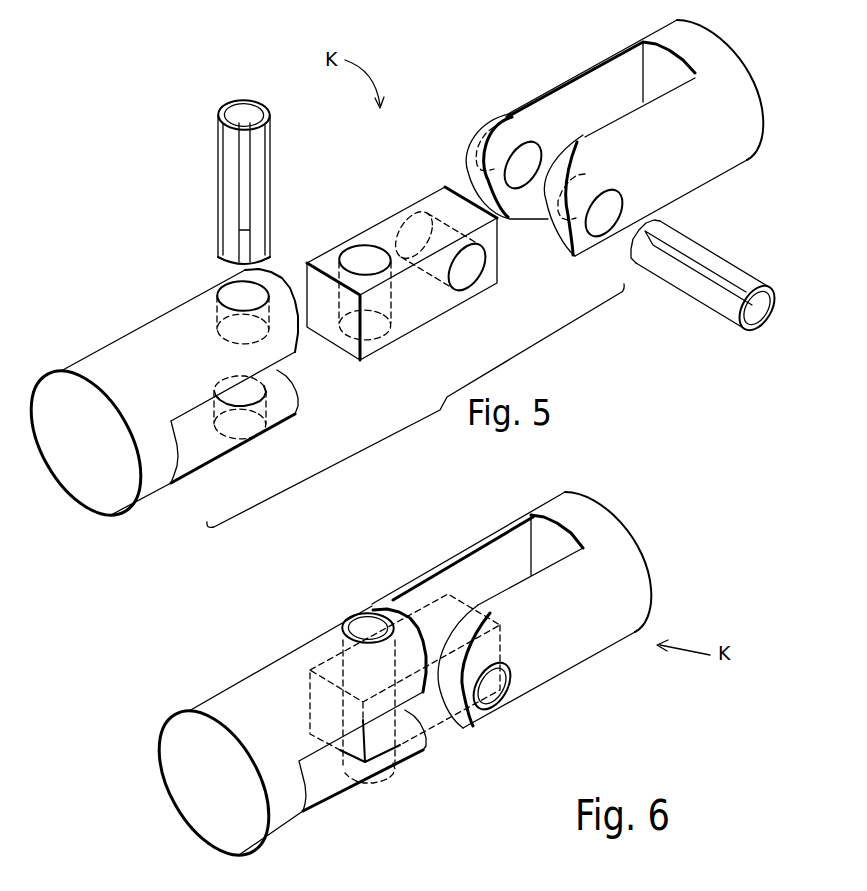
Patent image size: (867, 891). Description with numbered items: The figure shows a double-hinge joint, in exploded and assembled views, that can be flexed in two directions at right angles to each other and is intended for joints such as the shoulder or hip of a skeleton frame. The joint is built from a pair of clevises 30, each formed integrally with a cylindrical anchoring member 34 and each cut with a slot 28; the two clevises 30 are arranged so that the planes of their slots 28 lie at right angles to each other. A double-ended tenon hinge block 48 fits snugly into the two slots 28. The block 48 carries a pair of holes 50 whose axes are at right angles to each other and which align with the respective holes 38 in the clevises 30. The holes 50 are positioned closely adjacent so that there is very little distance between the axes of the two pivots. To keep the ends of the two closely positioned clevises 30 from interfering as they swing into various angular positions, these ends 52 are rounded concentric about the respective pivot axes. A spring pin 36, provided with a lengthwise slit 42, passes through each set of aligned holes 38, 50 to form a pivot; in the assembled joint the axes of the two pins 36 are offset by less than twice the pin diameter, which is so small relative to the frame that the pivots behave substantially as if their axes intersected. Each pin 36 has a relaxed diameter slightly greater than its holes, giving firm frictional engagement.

In FIG. 5, the slot 28 is at (203, 455).
In FIG. 6, the slot 28 is at (338, 796).
In FIG. 5, the clevis 30 is at (132, 347).
In FIG. 6, the clevis 30 is at (270, 672).
In FIG. 5, the cylindrical anchoring member 34 is at (146, 497).
In FIG. 6, the cylindrical anchoring member 34 is at (280, 830).
In FIG. 5, the spring pin 36 is at (265, 170).
In FIG. 6, the spring pin 36 is at (350, 622).
In FIG. 5, the holes 38 is at (230, 288).
In FIG. 5, the slit of pin 42 is at (250, 205).
In FIG. 5, the double-ended tenon hinge block 48 is at (433, 303).
In FIG. 6, the double-ended tenon hinge block 48 is at (428, 726).
In FIG. 5, the holes 50 is at (345, 250).
In FIG. 5, the ends 52 is at (299, 343).
In FIG. 6, the ends 52 is at (400, 598).